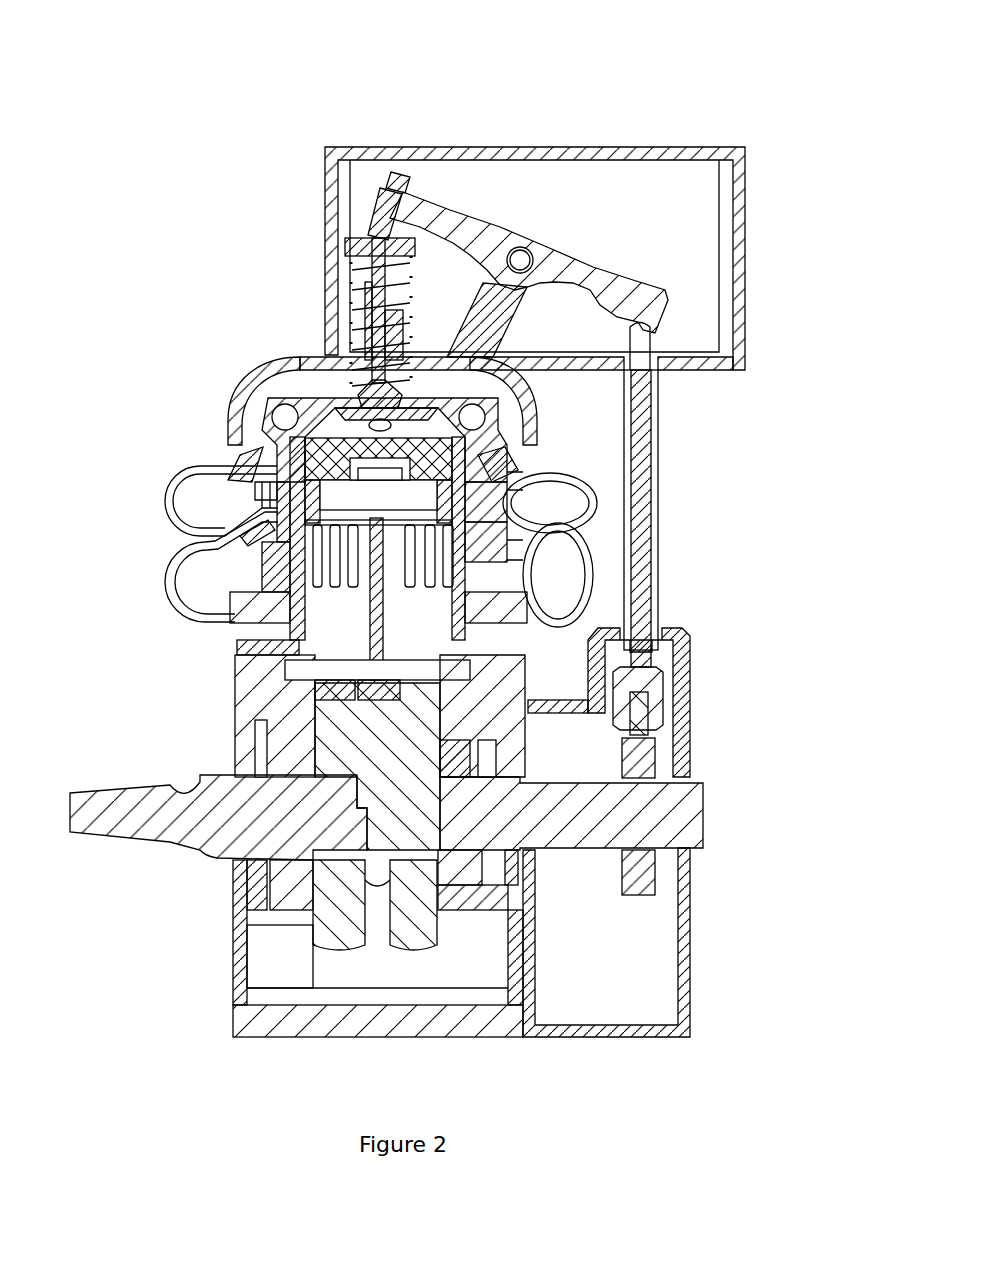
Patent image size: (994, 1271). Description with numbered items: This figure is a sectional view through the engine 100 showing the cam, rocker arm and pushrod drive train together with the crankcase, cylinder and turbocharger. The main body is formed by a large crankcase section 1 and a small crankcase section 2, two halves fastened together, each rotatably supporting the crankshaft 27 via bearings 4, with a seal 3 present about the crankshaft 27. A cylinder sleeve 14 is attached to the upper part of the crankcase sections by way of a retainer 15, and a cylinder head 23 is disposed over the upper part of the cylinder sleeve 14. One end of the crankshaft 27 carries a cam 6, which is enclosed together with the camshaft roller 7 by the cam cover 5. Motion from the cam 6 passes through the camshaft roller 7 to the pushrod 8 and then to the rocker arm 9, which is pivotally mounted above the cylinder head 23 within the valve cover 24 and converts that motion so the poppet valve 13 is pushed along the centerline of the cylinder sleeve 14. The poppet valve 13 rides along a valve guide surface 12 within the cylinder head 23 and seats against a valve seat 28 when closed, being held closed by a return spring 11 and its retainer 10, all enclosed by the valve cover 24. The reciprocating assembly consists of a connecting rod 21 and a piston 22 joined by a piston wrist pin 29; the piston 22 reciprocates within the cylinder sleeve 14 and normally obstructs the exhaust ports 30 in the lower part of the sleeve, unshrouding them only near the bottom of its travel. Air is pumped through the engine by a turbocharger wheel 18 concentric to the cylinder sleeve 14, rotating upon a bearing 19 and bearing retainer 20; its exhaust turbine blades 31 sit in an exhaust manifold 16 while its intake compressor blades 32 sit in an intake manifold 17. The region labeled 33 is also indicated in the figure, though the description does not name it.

The engine 100 is at (288, 107).
The large crankcase section 1 is at (470, 1030).
The small crankcase section 2 is at (258, 1024).
The seal 3 is at (245, 895).
The bearings 4 is at (285, 893).
The cam cover 5 is at (680, 970).
The cam 6 is at (637, 878).
The camshaft roller 7 is at (640, 705).
The pushrod 8 is at (637, 660).
The rocker arm 9 is at (633, 296).
The retainer 10 is at (350, 250).
The return spring 11 is at (345, 253).
The valve guide surface 12 is at (360, 295).
The poppet valve 13 is at (378, 333).
The cylinder sleeve 14 is at (300, 626).
The retainer 15 is at (285, 653).
The exhaust manifold 16 is at (160, 580).
The intake manifold 17 is at (155, 497).
The turbocharger wheel 18 is at (259, 520).
The bearing 19 is at (255, 490).
The bearing retainer 20 is at (295, 475).
The connecting rod 21 is at (340, 665).
The piston 22 is at (480, 452).
The cylinder head 23 is at (547, 404).
The valve cover 24 is at (630, 160).
The crankshaft 27 is at (148, 825).
The valve seat 28 is at (330, 410).
The piston wrist pin 29 is at (408, 493).
The exhaust port 30 is at (480, 556).
The exhaust turbine blades 31 is at (470, 571).
The intake compressor blades 32 is at (437, 463).
The combustion chamber 33 is at (278, 388).